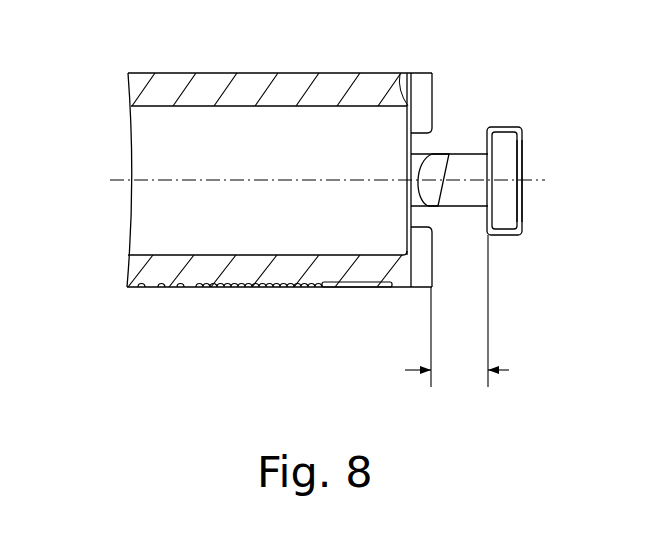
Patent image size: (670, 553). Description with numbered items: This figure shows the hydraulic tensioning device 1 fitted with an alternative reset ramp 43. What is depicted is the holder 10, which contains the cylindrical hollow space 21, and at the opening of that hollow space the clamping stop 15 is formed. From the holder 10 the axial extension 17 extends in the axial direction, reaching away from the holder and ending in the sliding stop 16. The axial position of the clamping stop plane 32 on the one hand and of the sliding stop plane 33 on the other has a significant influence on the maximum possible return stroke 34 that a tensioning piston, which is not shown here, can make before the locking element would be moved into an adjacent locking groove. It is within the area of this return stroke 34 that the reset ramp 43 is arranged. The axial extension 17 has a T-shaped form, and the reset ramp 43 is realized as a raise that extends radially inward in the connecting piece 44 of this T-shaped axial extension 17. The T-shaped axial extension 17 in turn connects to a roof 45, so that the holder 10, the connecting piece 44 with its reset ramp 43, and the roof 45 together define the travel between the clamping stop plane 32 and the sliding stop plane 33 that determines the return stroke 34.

The hydraulic tensioning device 1 is at (97, 104).
The holder 10 is at (268, 93).
The cylindrical hollow space 21 is at (185, 132).
The clamping stop 15 is at (401, 85).
The sliding stop 16 is at (490, 137).
The axial extension 17 is at (522, 160).
The reset ramp 43 is at (438, 167).
The connecting piece 44 is at (462, 200).
The roof 45 is at (507, 168).
The clamping stop plane 32 is at (431, 318).
The sliding stop plane 33 is at (488, 310).
The return stroke 34 is at (467, 371).